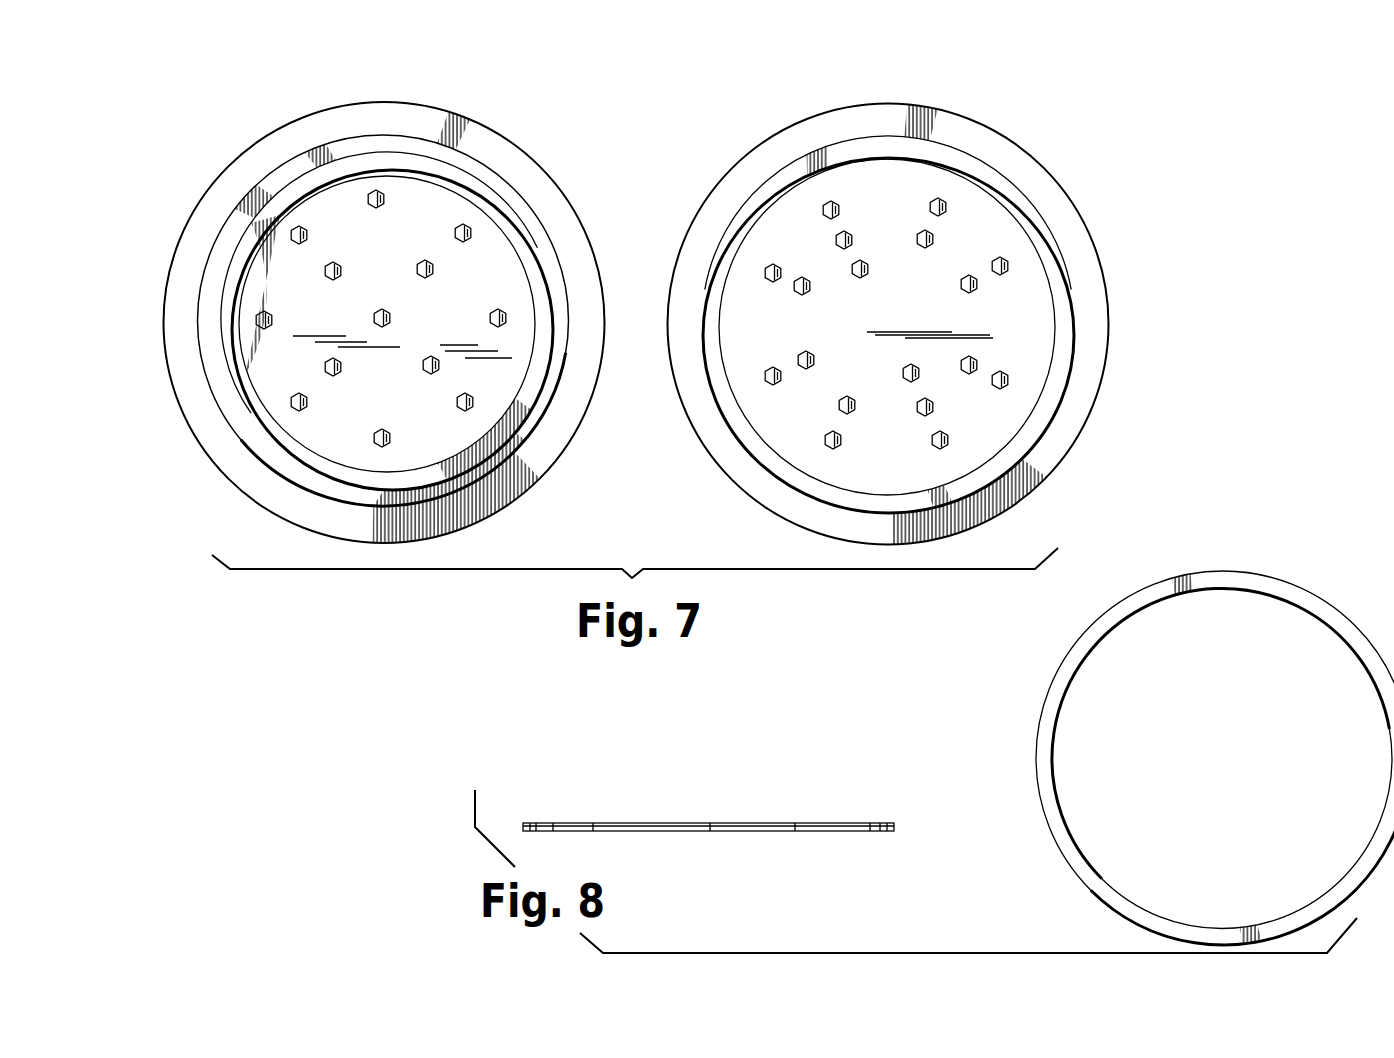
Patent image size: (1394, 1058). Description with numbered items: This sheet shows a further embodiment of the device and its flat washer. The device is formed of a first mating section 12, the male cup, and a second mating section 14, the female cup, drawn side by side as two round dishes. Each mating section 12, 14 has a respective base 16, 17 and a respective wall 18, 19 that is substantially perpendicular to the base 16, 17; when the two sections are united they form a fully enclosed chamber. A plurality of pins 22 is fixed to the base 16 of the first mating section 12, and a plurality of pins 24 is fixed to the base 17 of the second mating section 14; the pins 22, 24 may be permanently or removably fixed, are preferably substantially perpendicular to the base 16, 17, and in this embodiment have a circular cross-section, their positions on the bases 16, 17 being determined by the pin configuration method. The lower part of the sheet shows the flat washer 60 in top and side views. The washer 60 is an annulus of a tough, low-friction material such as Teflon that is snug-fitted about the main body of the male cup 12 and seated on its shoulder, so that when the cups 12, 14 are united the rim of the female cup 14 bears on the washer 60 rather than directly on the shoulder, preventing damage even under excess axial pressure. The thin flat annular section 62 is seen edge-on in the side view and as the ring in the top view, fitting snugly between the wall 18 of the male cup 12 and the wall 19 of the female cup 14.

In FIG. 7, the first mating section 12 is at (256, 156).
In FIG. 7, the second mating section 14 is at (756, 168).
In FIG. 7, the base 16 is at (390, 404).
In FIG. 7, the base 17 is at (892, 463).
In FIG. 7, the wall 18 is at (232, 258).
In FIG. 7, the wall 19 is at (235, 220).
In FIG. 7, the pins 22 is at (376, 209).
In FIG. 7, the pins 24 is at (853, 240).
In FIG. 8, the washer 60 is at (1303, 580).
In FIG. 8, the annular section 62 is at (877, 823).